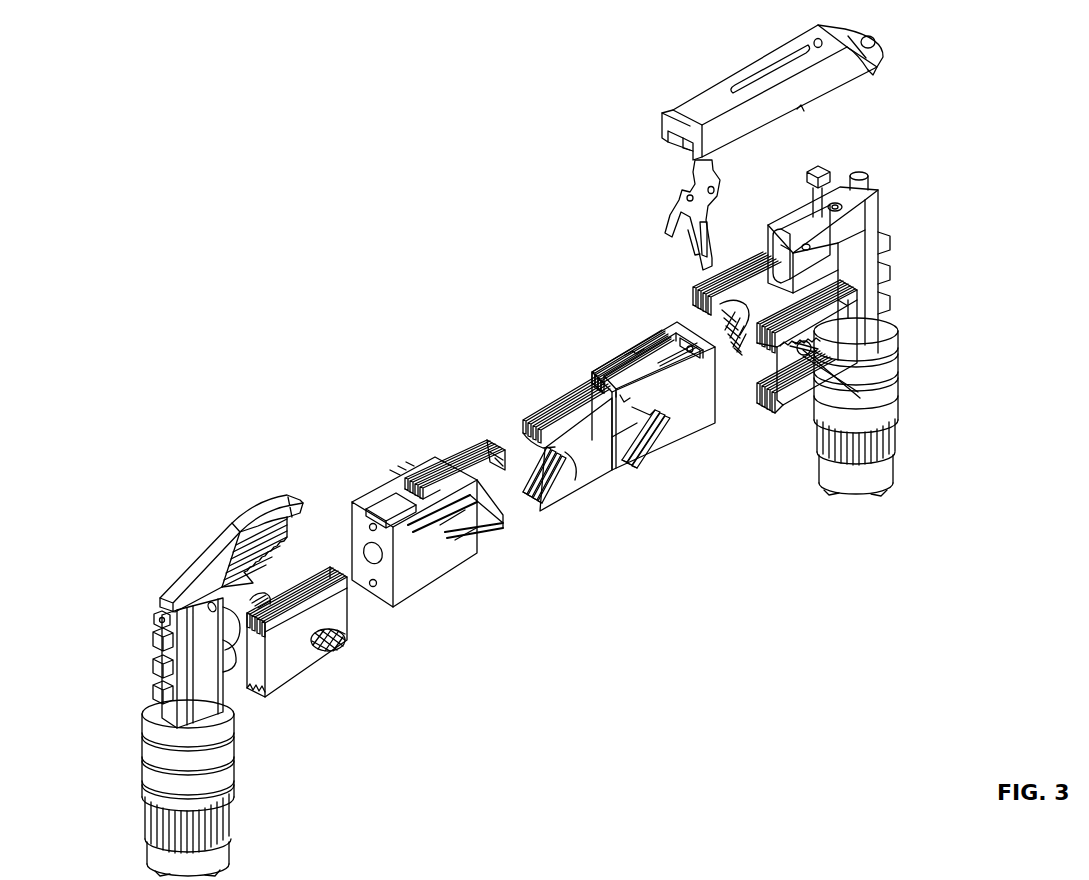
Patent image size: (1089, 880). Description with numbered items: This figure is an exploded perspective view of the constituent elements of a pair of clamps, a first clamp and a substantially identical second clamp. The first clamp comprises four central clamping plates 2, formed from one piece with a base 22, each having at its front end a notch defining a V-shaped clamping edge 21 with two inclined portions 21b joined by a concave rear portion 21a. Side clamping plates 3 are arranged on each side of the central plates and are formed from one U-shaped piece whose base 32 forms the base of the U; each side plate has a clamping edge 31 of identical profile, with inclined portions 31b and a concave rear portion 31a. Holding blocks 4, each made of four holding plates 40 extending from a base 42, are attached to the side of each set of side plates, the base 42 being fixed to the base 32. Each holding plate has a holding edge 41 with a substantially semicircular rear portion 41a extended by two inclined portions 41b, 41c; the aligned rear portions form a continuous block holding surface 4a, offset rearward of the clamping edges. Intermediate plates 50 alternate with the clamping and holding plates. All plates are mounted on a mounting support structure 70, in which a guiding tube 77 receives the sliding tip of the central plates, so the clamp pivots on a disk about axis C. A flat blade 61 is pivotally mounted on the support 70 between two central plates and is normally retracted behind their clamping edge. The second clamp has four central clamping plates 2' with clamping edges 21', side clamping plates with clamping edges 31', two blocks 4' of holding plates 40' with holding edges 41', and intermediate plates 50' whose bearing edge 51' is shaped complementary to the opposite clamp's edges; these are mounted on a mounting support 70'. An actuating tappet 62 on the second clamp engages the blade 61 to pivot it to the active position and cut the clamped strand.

The central clamping plates 2 is at (562, 408).
The central clamping plates 2' is at (455, 446).
The side clamping plates 3 is at (625, 357).
The holding blocks 4 is at (712, 277).
The holding blocks 4' is at (300, 646).
The block holding surface 4a is at (815, 358).
The clamping edge 21 is at (563, 492).
The clamping edges 21' is at (493, 430).
The concave rear portion 21a is at (570, 450).
The inclined portions 21b is at (547, 493).
The base 22 is at (595, 378).
The clamping edge 31 is at (662, 448).
The clamping edges 31' is at (482, 533).
The concave rear portion 31a is at (633, 407).
The inclined portions 31b is at (643, 460).
The base 32 is at (676, 327).
The holding plates 40 is at (842, 342).
The holding plates 40' is at (297, 661).
The holding edge 41 is at (855, 341).
The holding edges 41' is at (332, 648).
The semicircular concave rear portion 41a is at (807, 355).
The inclined portion 41b is at (802, 350).
The inclined portion 41c is at (782, 415).
The base 42 is at (853, 312).
The intermediate plates 50 is at (653, 380).
The intermediate plates 50' is at (414, 539).
The bearing edge 51' is at (455, 536).
The flat blade 61 is at (710, 253).
The actuating tappet 62 is at (253, 500).
The mounting support structure 70 is at (797, 260).
The mounting support 70' is at (170, 737).
The guiding tube 77 is at (885, 267).